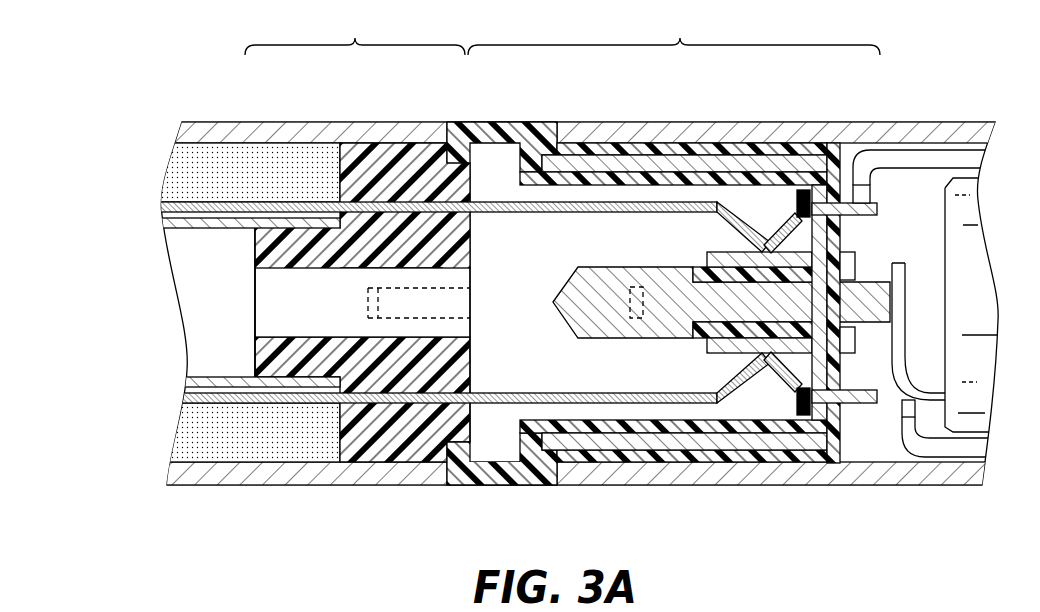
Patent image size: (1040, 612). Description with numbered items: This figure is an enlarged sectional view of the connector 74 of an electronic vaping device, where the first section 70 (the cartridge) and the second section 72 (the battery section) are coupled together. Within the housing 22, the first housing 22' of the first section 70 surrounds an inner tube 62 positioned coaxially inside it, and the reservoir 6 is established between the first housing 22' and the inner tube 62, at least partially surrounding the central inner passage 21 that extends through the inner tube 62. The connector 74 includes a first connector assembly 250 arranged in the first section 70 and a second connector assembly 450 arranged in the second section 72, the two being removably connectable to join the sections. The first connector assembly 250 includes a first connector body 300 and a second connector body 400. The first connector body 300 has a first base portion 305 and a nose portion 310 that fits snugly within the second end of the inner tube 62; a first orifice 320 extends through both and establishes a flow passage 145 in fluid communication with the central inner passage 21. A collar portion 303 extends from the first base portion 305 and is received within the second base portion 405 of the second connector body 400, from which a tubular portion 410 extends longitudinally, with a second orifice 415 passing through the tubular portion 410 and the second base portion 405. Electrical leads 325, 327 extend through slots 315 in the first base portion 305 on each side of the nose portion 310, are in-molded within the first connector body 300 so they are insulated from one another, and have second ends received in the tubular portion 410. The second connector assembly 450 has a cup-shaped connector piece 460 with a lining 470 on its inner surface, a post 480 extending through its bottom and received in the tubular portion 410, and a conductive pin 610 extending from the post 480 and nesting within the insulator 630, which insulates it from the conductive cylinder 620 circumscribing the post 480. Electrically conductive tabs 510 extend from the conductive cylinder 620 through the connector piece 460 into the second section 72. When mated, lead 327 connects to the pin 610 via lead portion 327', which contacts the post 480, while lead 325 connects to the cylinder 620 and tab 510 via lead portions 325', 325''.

The first section 70 is at (204, 80).
The second section 72 is at (895, 87).
The connector 74 is at (457, 504).
The housing 22 is at (782, 275).
The first housing 22' is at (298, 278).
The reservoir 6 is at (239, 180).
The central inner passage 21 is at (232, 315).
The inner tube 62 is at (193, 228).
The flow passage 145 is at (319, 316).
The first connector assembly 250 is at (355, 32).
The first connector body 300 is at (480, 245).
The collar portion 303 is at (457, 122).
The first base portion 305 is at (392, 148).
The nose portion 310 is at (268, 245).
The slots 315 is at (332, 403).
The first orifice 320 is at (267, 285).
The electrical lead 325 is at (418, 181).
The lead portion 325' is at (739, 383).
The lead portion 325'' is at (763, 220).
The electrical lead 327 is at (422, 420).
The lead portion 327' is at (505, 327).
The second connector body 400 is at (499, 114).
The second base portion 405 is at (518, 485).
The tubular portion 410 is at (628, 428).
The second orifice 415 is at (527, 420).
The second connector assembly 450 is at (674, 237).
The connector piece 460 is at (603, 155).
The lining 470 is at (579, 143).
The post 480 is at (600, 338).
The electrically conductive tabs 510 is at (865, 215).
The conductive pin 610 is at (873, 325).
The conductive cylinder 620 is at (742, 252).
The insulator 630 is at (700, 266).